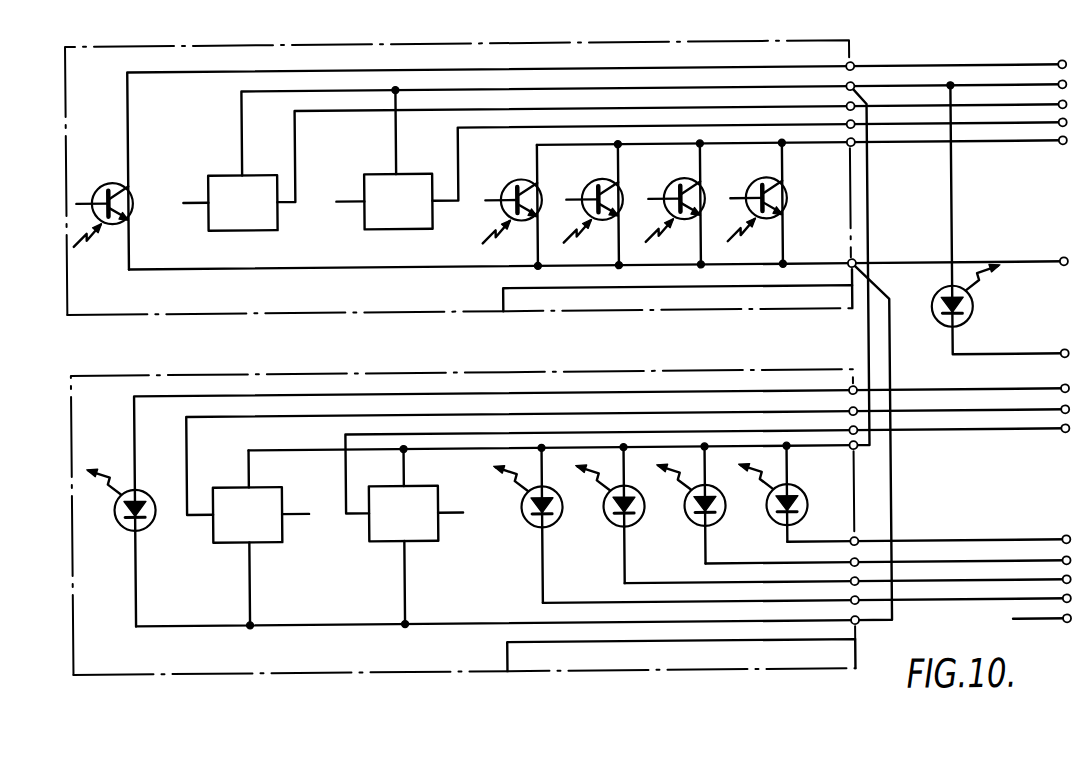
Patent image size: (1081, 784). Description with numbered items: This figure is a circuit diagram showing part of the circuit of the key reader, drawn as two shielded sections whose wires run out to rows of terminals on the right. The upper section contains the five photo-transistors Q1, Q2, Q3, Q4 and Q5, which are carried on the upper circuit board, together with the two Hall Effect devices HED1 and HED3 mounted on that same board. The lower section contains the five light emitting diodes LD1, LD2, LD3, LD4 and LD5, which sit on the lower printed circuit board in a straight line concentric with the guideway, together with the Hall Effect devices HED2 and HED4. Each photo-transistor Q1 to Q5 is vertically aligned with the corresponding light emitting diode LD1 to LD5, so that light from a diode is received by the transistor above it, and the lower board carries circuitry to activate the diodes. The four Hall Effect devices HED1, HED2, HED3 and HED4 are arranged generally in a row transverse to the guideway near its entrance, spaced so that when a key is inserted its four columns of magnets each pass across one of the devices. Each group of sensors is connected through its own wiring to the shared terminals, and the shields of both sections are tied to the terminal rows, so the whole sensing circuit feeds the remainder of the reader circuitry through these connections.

The photo-transistor Q1 is at (132, 191).
The photo-transistor Q2 is at (505, 190).
The photo-transistor Q3 is at (586, 190).
The photo-transistor Q4 is at (668, 190).
The photo-transistor Q5 is at (750, 190).
The Hall Effect device HED1 is at (516, 158).
The Hall Effect device HED2 is at (520, 520).
The Hall Effect device HED3 is at (593, 156).
The Hall Effect device HED4 is at (600, 529).
The light emitting diode LD1 is at (146, 526).
The light emitting diode LD2 is at (520, 522).
The light emitting diode LD3 is at (602, 522).
The light emitting diode LD4 is at (683, 522).
The light emitting diode LD5 is at (765, 522).